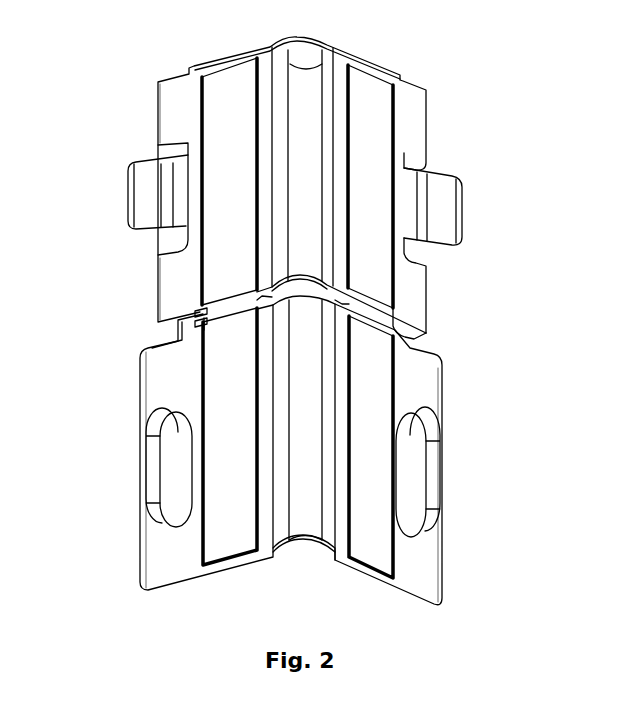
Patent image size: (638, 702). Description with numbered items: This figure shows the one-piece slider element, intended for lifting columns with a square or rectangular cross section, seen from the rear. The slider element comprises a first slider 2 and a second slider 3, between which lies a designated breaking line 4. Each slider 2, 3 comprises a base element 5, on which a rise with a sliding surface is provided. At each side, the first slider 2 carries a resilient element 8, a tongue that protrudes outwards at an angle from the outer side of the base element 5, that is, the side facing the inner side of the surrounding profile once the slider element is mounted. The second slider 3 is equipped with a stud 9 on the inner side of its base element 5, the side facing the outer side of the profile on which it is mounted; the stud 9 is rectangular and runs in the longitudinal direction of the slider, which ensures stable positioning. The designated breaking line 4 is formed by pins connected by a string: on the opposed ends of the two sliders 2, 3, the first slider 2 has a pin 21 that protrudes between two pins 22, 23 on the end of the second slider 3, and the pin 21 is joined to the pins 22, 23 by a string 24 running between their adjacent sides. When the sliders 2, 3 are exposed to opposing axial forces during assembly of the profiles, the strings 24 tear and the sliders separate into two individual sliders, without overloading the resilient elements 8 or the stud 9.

The first slider 2 is at (430, 126).
The second slider 3 is at (443, 409).
The designated breaking line 4 is at (410, 337).
The base element 5 is at (328, 43).
The resilient element 8 is at (128, 163).
The stud 9 is at (172, 477).
The pin 21 is at (204, 324).
The pin 22 is at (183, 330).
The pin 23 is at (235, 300).
The string 24 is at (232, 300).